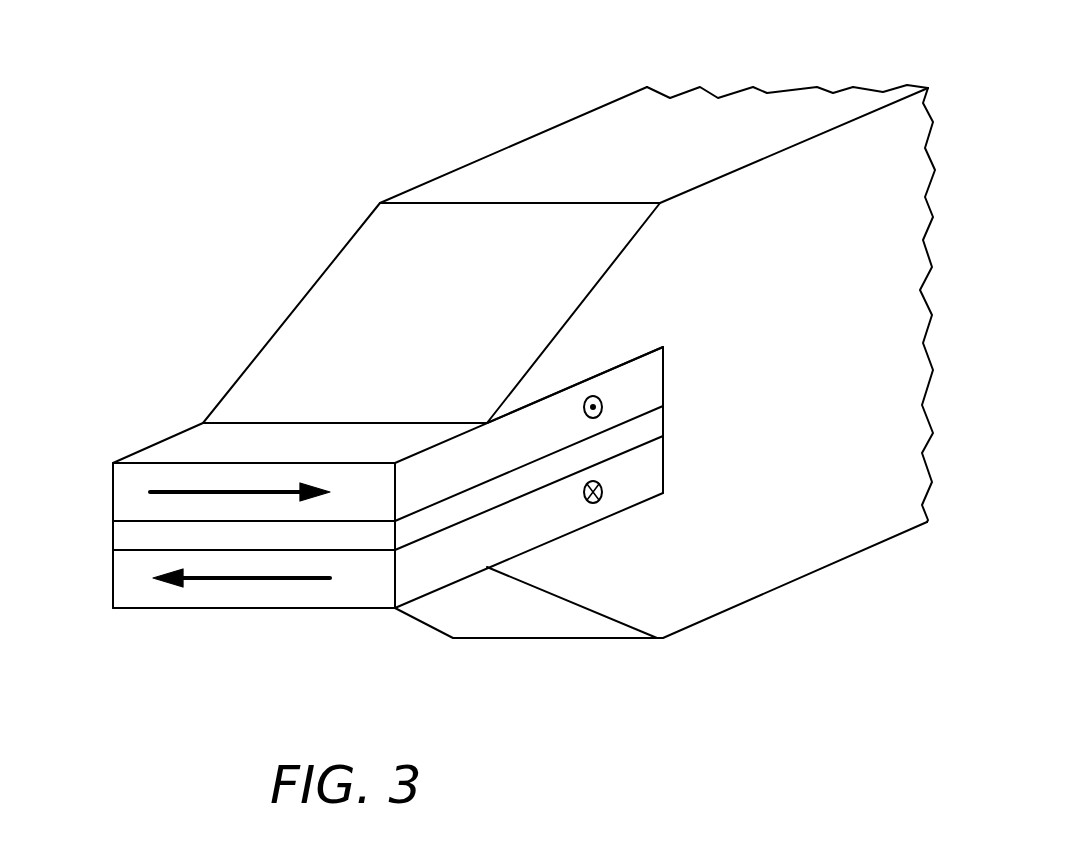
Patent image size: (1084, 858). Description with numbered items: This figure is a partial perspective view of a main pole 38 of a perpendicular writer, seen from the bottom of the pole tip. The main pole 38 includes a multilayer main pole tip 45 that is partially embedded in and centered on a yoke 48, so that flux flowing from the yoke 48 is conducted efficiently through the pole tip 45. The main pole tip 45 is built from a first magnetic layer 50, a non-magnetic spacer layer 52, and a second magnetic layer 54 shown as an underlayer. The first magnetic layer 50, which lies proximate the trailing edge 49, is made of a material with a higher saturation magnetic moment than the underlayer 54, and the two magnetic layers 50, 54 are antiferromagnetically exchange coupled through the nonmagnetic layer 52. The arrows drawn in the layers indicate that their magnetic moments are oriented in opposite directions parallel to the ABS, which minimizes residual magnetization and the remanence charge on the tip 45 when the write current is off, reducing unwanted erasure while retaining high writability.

The main pole 38 is at (338, 92).
The main pole tip 45 is at (363, 590).
The yoke 48 is at (488, 177).
The trailing edge 49 is at (172, 463).
The first magnetic layer 50 is at (128, 475).
The non-magnetic spacer layer 52 is at (122, 532).
The second magnetic layer 54 is at (123, 577).
The air bearing surface ABS is at (240, 593).